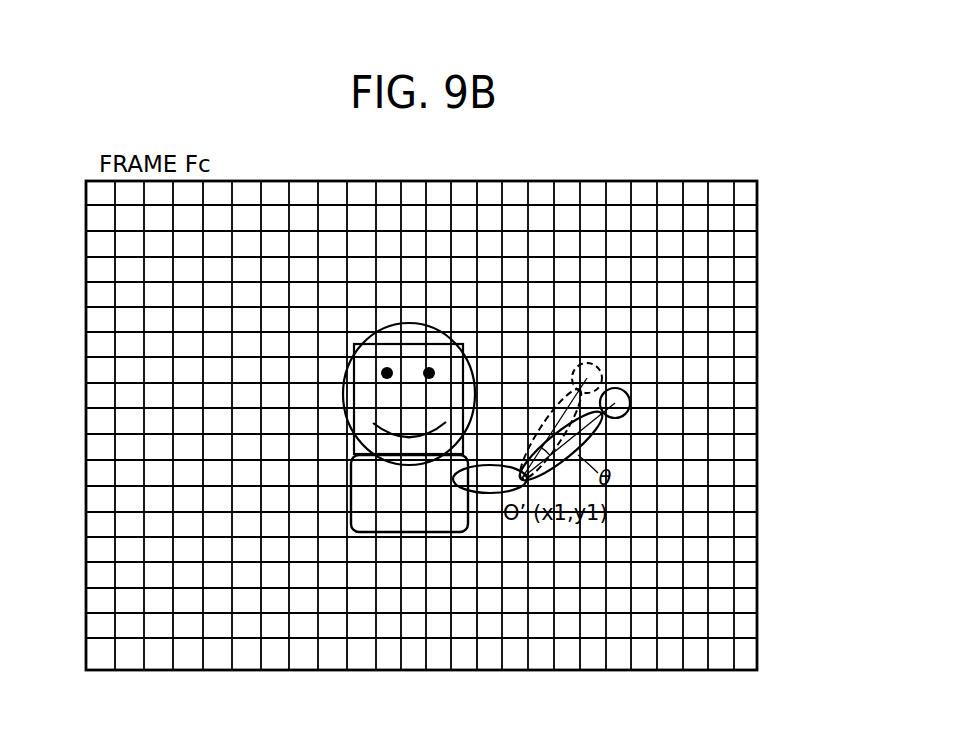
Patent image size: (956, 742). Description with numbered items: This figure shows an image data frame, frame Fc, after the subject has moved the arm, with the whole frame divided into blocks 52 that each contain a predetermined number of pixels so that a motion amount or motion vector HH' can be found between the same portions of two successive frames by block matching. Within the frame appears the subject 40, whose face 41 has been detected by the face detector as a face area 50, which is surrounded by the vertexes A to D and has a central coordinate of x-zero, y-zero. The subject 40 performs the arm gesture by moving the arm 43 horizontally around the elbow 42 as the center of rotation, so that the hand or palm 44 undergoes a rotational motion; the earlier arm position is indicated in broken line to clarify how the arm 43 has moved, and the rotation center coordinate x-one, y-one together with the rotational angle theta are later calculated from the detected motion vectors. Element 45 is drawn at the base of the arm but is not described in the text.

The subject 40 is at (358, 491).
The face 41 is at (406, 337).
The elbow 42 is at (522, 473).
The arm 43 is at (602, 452).
The hand or palm 44 is at (623, 389).
The shoulder (arm base) 45 is at (458, 480).
The face area 50 is at (354, 443).
The blocks 52 is at (494, 216).